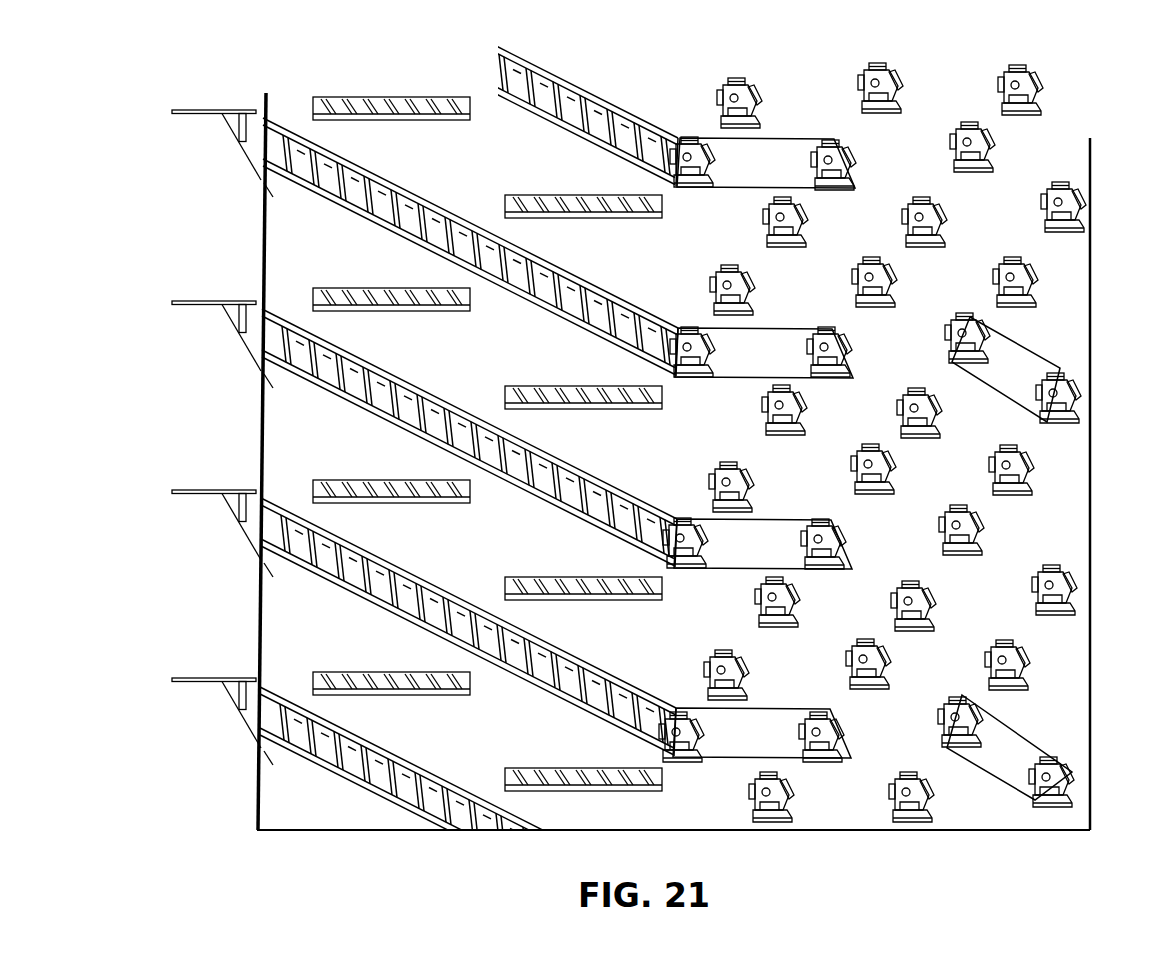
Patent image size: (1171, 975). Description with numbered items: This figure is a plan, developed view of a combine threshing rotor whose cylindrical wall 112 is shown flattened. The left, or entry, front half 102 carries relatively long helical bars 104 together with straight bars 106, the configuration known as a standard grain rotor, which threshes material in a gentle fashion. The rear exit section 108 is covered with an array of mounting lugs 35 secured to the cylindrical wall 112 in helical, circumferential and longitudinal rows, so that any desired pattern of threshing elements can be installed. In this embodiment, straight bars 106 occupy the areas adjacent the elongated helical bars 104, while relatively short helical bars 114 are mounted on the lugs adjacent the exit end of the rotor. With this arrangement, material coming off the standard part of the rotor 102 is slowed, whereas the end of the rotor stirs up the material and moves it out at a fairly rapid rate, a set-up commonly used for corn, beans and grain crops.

The mounting lug 35 is at (1038, 283).
The front half 102 is at (398, 829).
The helical bar 104 is at (307, 570).
The straight bar 106 is at (762, 518).
The exit section 108 is at (860, 812).
The cylindrical wall 112 is at (1077, 450).
The short helical bar 114 is at (1003, 398).